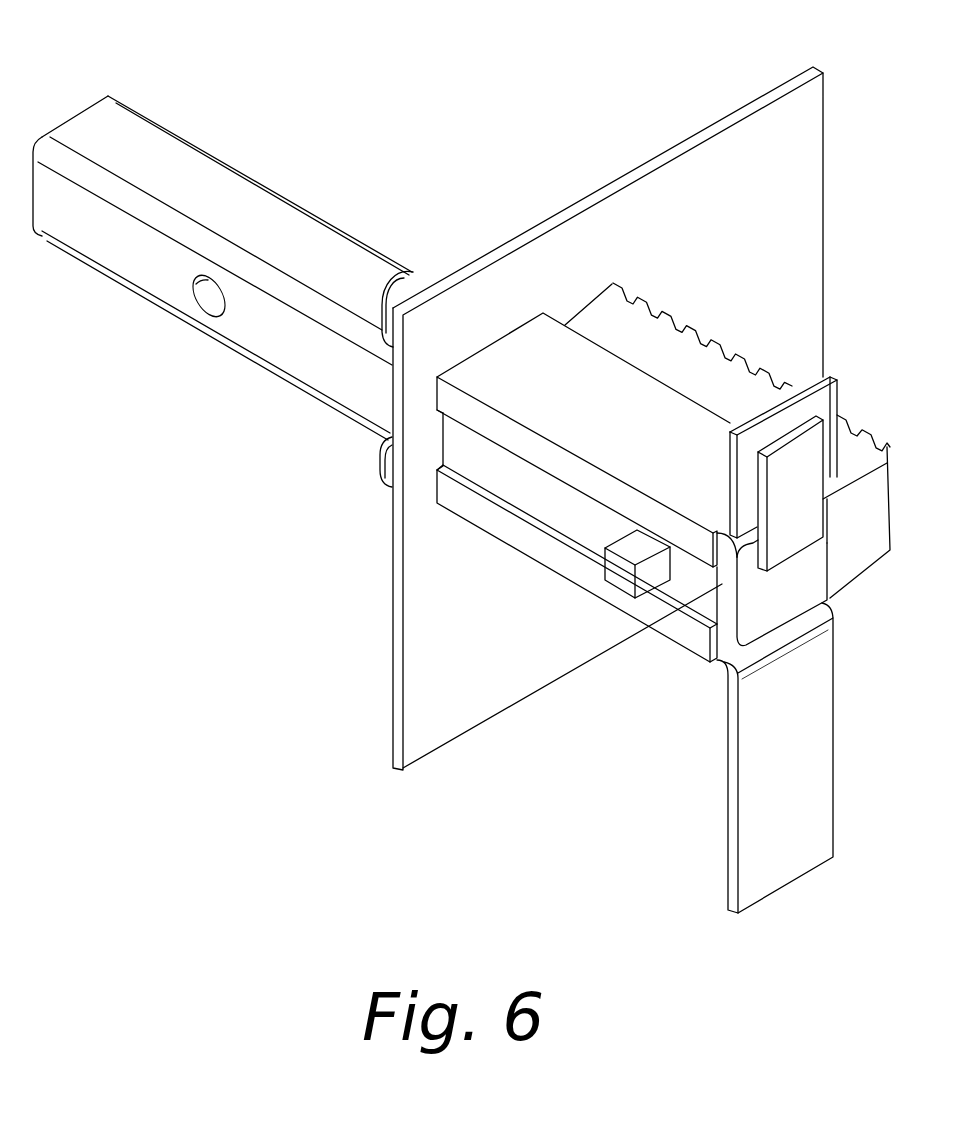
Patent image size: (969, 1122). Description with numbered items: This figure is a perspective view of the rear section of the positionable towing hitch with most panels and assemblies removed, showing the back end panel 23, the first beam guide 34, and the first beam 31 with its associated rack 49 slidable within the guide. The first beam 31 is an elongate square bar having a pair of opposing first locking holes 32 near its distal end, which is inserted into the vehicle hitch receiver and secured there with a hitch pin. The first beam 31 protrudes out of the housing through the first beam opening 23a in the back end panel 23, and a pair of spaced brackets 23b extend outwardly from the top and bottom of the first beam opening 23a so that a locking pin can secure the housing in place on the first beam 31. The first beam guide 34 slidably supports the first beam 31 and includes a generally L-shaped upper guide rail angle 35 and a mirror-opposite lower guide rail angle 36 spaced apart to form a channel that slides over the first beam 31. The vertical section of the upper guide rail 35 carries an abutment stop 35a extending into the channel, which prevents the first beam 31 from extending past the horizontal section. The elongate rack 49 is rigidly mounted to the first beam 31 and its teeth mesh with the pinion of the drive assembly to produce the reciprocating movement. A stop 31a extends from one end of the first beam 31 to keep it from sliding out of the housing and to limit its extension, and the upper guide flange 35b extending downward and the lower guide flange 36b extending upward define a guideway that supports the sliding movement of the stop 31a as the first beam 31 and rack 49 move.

The back end panel 23 is at (737, 110).
The first beam opening 23a is at (589, 297).
The brackets 23b is at (440, 270).
The first beam 31 is at (220, 158).
The stop 31a is at (620, 578).
The first locking holes 32 is at (207, 297).
The first beam guide 34 is at (438, 535).
The upper guide rail angle 35 is at (495, 360).
The abutment stop 35a is at (802, 495).
The upper guide flange 35b is at (553, 462).
The lower guide rail angle 36 is at (727, 767).
The lower guide flange 36b is at (537, 550).
The rack gear 49 is at (663, 357).